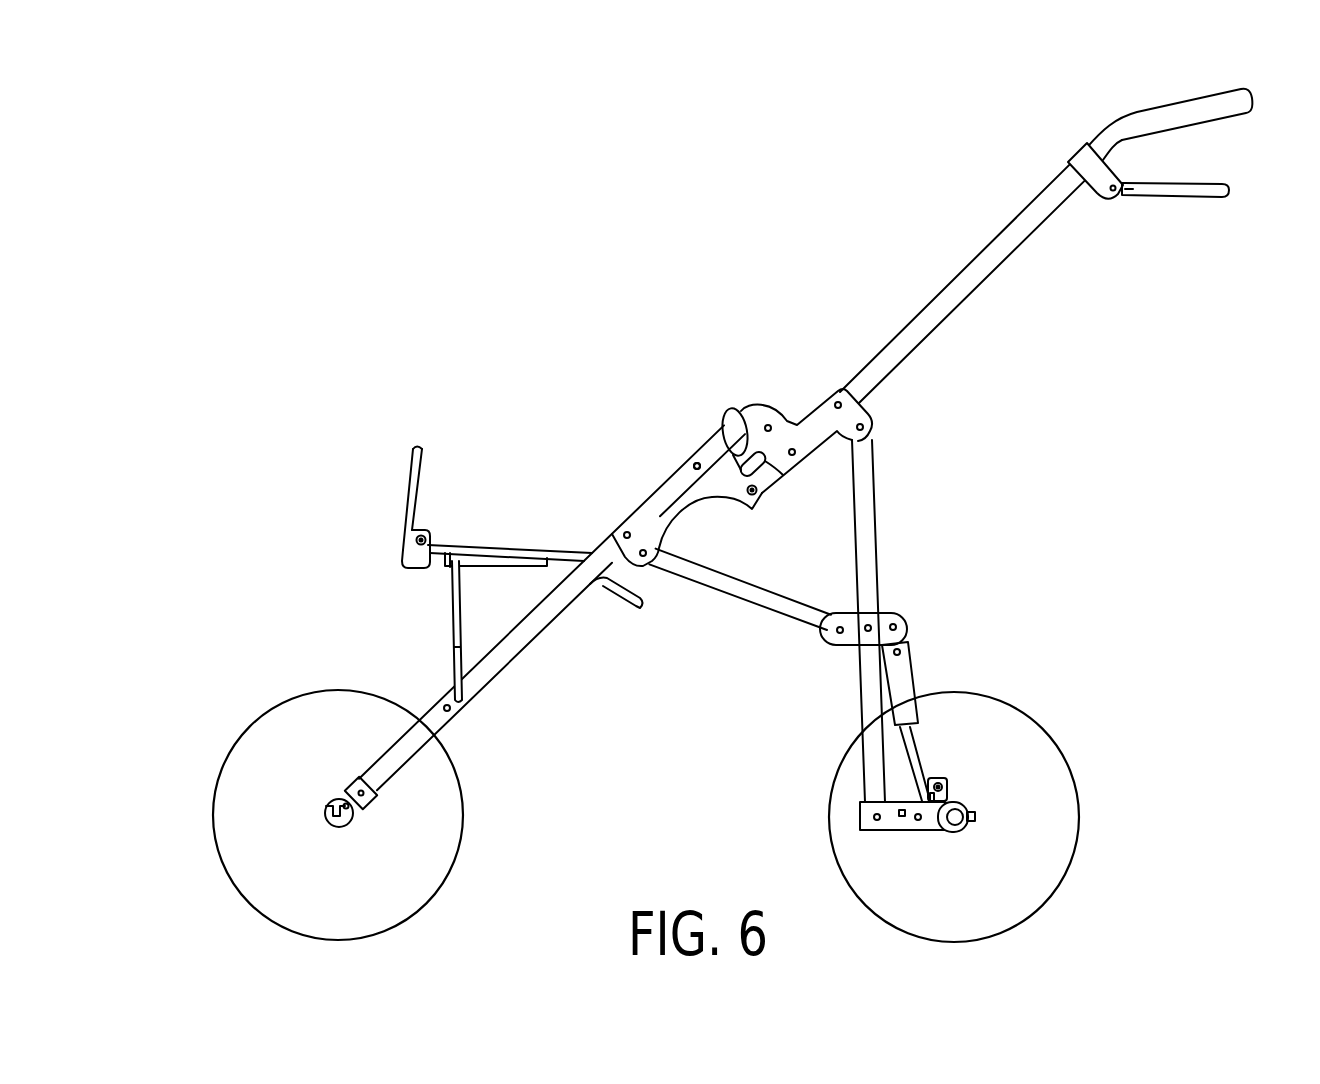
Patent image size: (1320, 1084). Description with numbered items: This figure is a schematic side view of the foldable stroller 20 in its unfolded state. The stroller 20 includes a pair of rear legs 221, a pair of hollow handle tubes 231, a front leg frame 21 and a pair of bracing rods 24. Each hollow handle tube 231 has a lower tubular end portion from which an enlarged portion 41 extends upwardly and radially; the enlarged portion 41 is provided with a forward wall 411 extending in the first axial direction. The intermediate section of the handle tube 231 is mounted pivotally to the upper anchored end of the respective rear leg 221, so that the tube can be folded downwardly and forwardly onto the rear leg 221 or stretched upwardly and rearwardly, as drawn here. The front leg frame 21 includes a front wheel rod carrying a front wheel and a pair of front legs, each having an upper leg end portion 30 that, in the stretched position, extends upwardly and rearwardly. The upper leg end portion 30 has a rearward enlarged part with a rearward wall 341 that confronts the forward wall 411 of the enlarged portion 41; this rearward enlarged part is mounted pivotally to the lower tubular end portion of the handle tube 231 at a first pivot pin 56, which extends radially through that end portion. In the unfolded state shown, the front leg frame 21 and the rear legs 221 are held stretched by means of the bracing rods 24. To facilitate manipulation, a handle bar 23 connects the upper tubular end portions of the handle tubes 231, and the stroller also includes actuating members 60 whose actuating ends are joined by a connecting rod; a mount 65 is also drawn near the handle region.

The foldable stroller 20 is at (1001, 209).
The front leg frame 21 is at (498, 676).
The handle bar 23 is at (1158, 113).
The hollow handle tube 231 is at (1002, 274).
The brake lever mount clamp 65 is at (1095, 193).
The actuating member 60 is at (1198, 211).
The enlarged portion 41 is at (767, 407).
The forward wall 411 is at (738, 413).
The rearward wall 341 is at (697, 452).
The upper leg end portion 30 is at (630, 512).
The first pivot pin 56 is at (757, 490).
The rear leg 221 is at (876, 513).
The bracing rod 24 is at (782, 621).